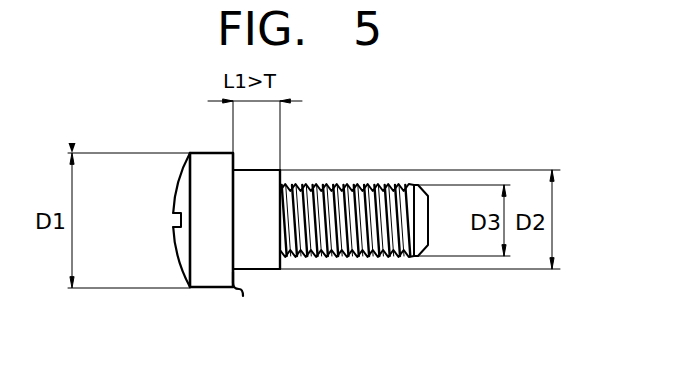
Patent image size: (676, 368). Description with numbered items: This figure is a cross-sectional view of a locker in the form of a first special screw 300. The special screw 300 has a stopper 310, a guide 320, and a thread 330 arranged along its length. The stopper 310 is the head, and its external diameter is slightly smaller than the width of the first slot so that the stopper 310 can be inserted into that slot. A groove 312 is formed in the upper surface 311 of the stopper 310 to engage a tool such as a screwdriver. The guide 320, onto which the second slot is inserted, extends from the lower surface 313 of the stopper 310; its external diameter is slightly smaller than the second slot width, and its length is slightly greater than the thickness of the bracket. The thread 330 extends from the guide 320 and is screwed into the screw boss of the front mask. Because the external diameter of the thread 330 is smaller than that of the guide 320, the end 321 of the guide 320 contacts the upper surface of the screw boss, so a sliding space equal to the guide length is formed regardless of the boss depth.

The first special screw 300 is at (423, 151).
The stopper 310 is at (207, 150).
The upper surface 311 is at (185, 258).
The groove 312 is at (176, 220).
The lower surface 313 is at (241, 290).
The guide 320 is at (260, 271).
The end 321 is at (284, 173).
The thread 330 is at (363, 258).